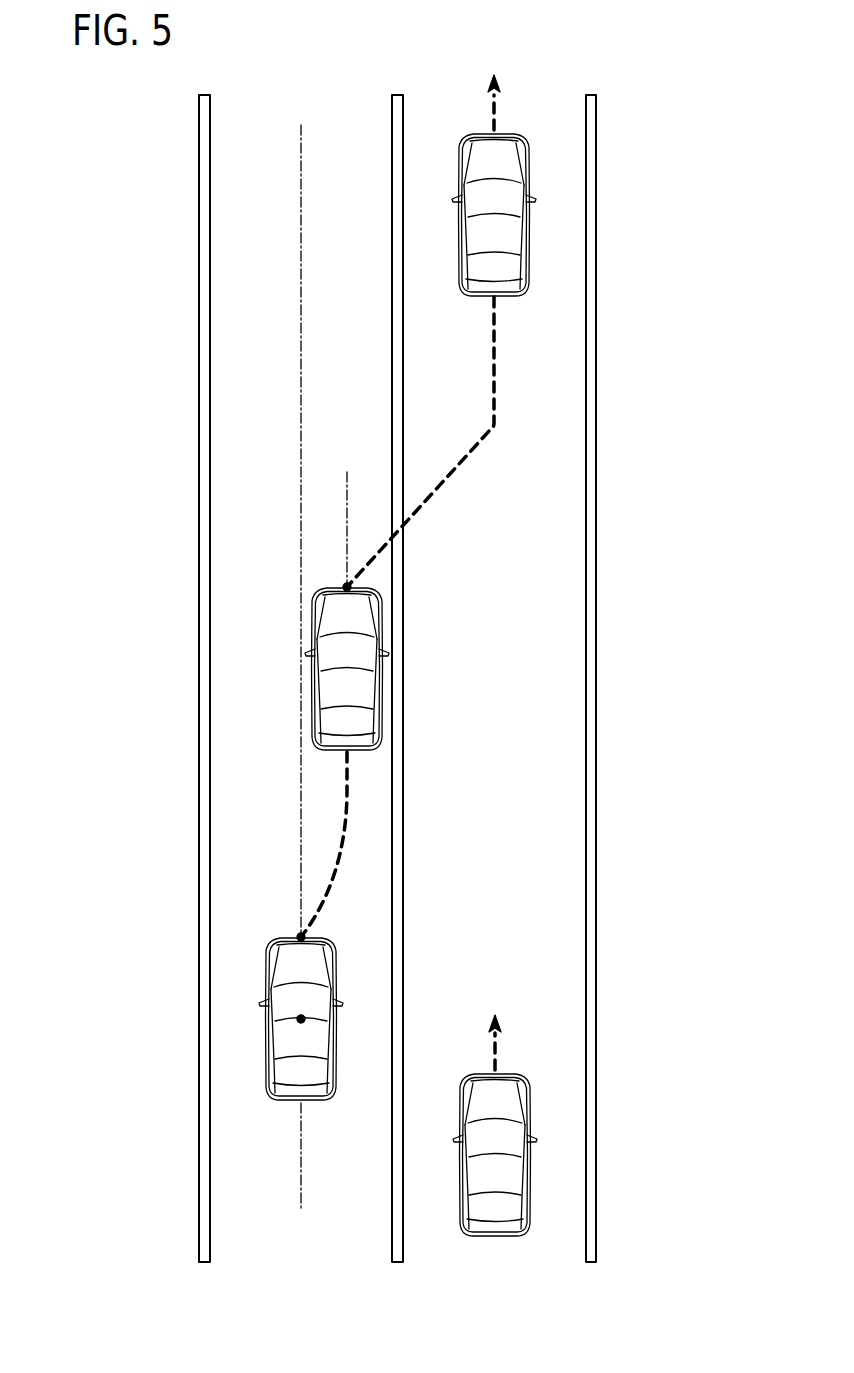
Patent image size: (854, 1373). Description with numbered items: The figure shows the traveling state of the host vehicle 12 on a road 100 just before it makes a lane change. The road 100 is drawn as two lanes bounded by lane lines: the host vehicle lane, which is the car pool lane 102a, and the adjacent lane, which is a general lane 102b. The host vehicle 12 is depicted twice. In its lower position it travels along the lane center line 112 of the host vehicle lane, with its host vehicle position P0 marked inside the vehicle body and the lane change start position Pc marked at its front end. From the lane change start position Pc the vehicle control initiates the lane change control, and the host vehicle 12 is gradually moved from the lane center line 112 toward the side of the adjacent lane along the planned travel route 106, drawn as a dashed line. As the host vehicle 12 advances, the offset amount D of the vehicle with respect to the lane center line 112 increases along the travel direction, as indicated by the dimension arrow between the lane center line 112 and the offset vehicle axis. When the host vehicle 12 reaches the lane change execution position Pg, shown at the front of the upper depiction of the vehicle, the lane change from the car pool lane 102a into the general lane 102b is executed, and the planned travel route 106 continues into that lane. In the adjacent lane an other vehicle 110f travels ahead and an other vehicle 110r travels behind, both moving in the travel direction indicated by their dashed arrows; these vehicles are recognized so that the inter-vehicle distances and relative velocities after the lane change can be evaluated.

The host vehicle 12 is at (382, 688).
The road 100 is at (396, 678).
The car pool lane 102a is at (250, 1170).
The general lane 102b is at (545, 1170).
The planned travel route 106 is at (349, 790).
The other vehicle in front 110f is at (530, 233).
The other vehicle behind 110r is at (530, 1110).
The lane center line 112 is at (302, 1178).
The offset amount D is at (345, 478).
The lane change execution position Pg is at (345, 585).
The lane change start position Pc is at (300, 935).
The host vehicle position P0 is at (300, 1018).